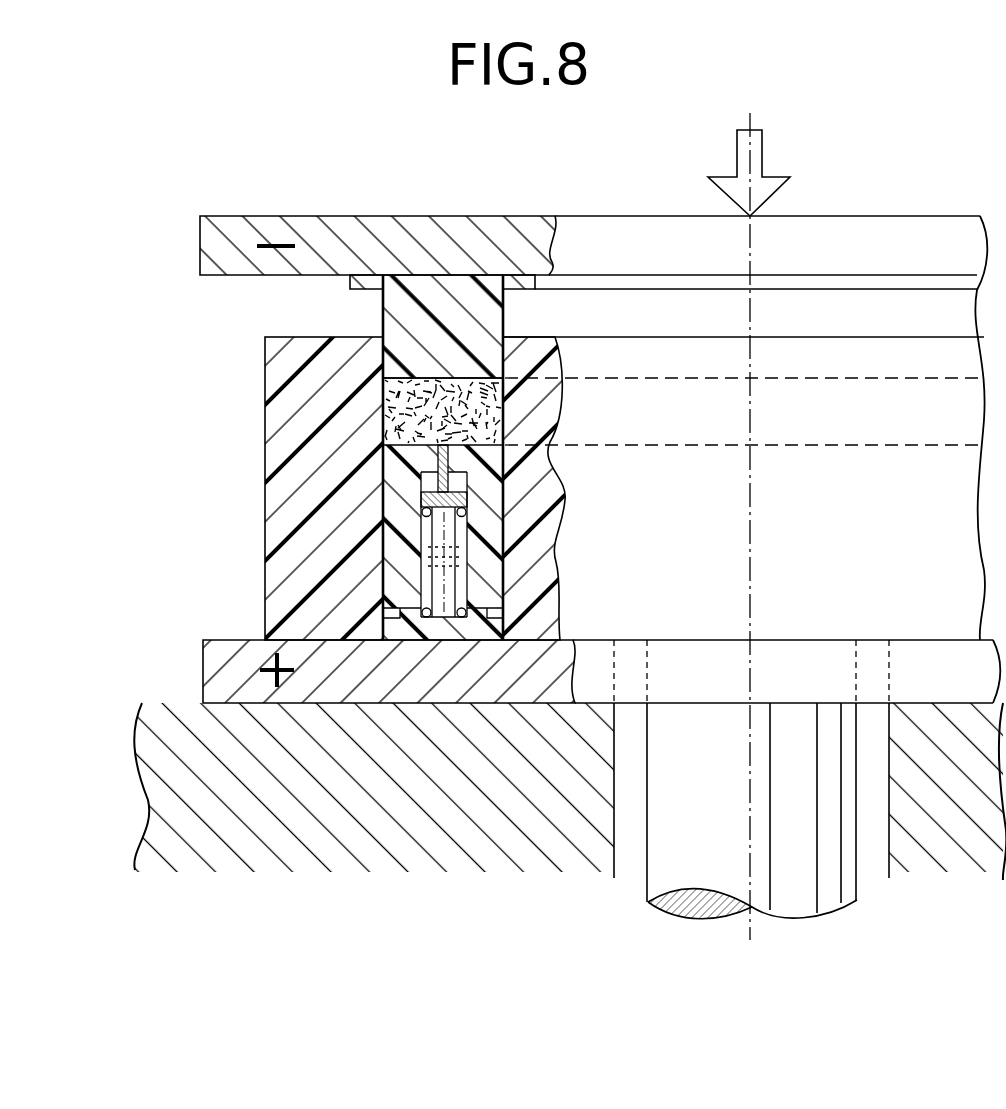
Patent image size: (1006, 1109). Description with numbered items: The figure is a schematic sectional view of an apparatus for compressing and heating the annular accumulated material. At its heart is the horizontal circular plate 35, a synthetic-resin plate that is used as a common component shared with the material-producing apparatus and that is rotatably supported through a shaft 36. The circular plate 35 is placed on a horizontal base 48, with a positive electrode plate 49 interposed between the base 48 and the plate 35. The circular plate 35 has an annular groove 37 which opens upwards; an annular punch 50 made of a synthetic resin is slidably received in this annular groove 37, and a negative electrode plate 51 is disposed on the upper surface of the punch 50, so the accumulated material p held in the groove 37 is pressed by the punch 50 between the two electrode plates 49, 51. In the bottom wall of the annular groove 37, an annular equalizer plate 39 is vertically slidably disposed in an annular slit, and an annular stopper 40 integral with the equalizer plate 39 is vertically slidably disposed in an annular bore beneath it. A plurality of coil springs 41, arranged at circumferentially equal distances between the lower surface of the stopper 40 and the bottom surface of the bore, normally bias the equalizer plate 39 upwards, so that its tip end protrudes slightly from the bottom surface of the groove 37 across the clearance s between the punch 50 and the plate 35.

The horizontal circular plate 35 is at (273, 578).
The shaft 36 is at (660, 875).
The annular groove 37 is at (500, 390).
The annular equalizer plate 39 is at (393, 472).
The annular stopper 40 is at (467, 493).
The coil spring 41 is at (460, 530).
The horizontal base 48 is at (168, 778).
The positive electrode plate 49 is at (213, 670).
The annular punch 50 is at (400, 312).
The negative electrode plate 51 is at (386, 226).
The powder p is at (380, 430).
The clearance gap s is at (505, 445).